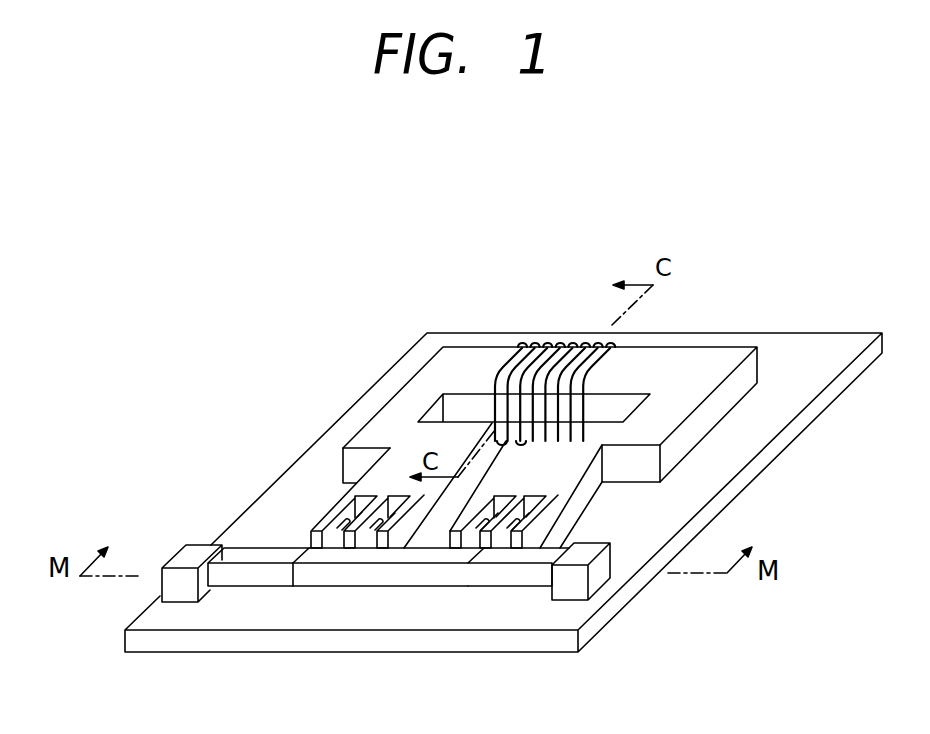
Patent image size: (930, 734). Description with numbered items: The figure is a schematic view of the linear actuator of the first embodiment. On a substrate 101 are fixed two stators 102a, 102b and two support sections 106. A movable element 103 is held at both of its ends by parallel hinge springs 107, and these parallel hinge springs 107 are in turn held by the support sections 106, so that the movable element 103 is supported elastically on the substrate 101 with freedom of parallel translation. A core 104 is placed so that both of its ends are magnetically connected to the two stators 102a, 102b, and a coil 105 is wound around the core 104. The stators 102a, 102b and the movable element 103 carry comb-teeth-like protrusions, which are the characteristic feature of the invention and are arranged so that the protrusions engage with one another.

The substrate 101 is at (809, 346).
The stator 102a is at (401, 467).
The stator 102b is at (552, 480).
The movable element 103 is at (393, 578).
The core 104 is at (438, 363).
The coil 105 is at (545, 343).
The support section 106 is at (185, 553).
The parallel hinge spring 107 is at (257, 578).